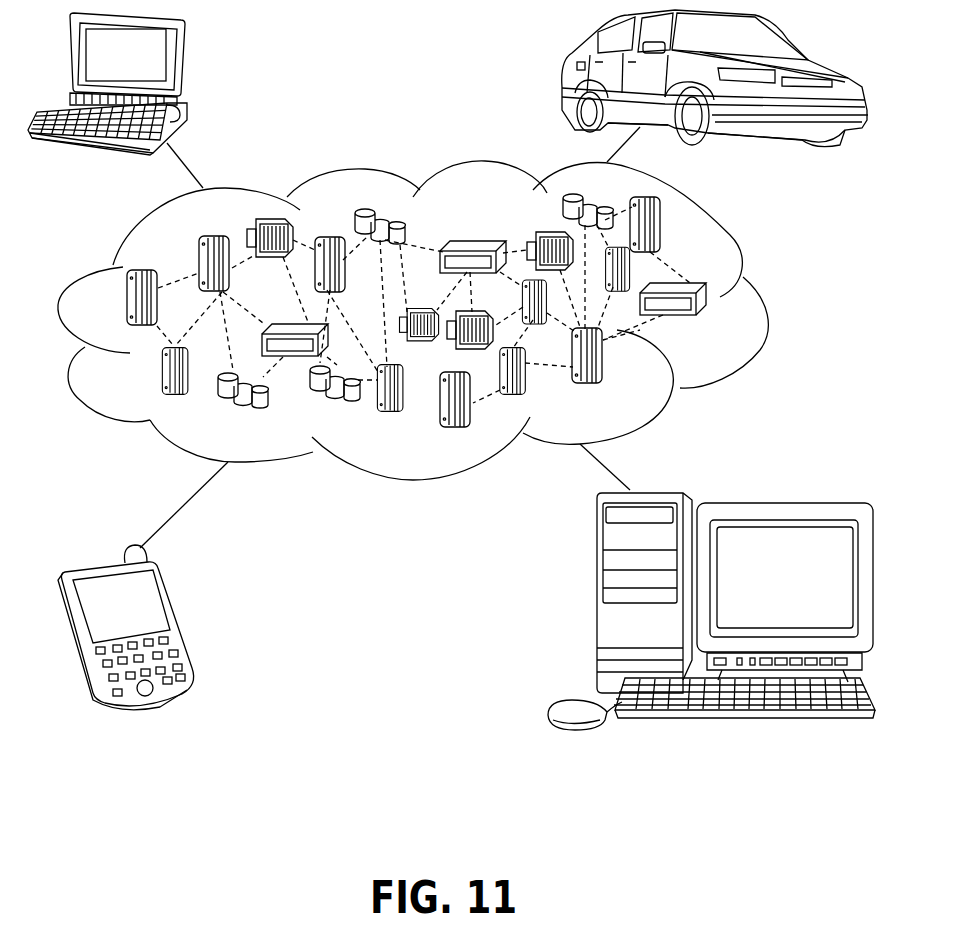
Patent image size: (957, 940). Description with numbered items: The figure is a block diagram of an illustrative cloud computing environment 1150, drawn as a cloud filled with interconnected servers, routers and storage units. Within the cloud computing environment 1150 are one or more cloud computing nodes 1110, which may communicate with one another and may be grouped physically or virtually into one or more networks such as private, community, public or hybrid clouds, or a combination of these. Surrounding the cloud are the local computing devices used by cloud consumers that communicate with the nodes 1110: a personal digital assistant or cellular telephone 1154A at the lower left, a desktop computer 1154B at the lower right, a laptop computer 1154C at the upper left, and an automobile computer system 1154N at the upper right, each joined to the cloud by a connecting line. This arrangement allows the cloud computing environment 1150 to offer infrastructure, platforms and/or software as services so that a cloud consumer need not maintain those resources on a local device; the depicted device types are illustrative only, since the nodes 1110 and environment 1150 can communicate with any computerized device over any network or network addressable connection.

The cloud computing environment 1150 is at (750, 258).
The cloud computing nodes 1110 is at (726, 320).
The laptop computer 1154C is at (183, 63).
The automobile computer system 1154N is at (567, 70).
The personal digital assistant (PDA) or cellular telephone 1154A is at (175, 623).
The desktop computer 1154B is at (597, 600).